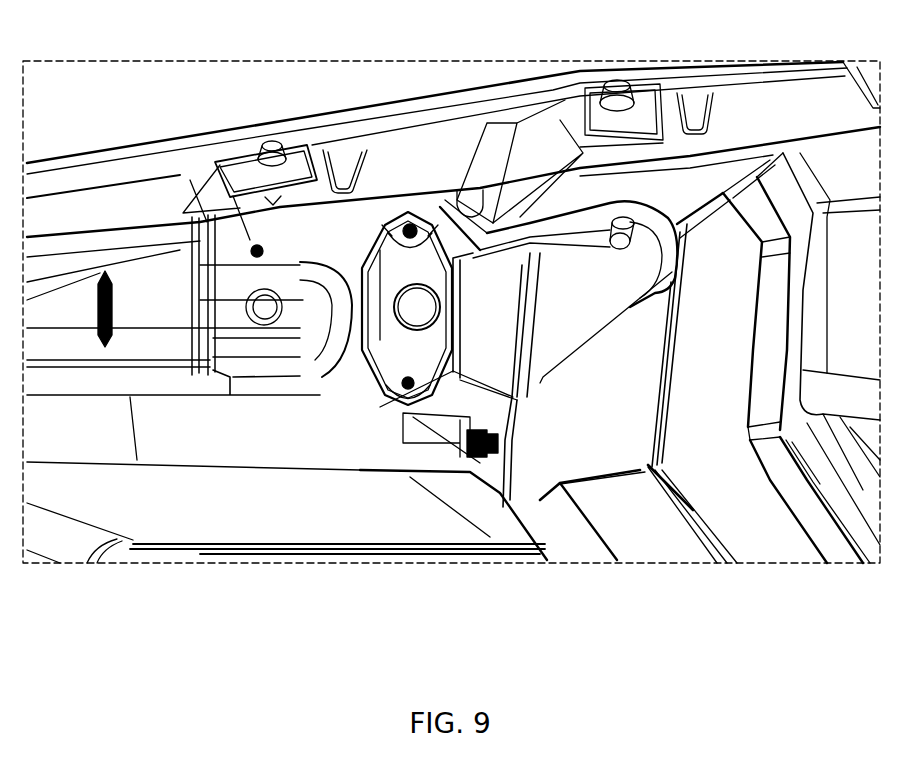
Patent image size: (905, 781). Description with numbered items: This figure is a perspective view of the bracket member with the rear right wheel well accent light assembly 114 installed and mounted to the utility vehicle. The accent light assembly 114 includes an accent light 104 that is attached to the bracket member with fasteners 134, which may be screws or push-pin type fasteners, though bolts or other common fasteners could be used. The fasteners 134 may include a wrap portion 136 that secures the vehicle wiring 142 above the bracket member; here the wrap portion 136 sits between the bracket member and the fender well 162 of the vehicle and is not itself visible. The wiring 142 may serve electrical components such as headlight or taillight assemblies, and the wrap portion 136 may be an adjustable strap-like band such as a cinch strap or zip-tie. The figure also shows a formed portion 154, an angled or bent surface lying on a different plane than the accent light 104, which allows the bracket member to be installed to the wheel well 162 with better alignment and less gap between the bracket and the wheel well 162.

The accent light 104 is at (370, 383).
The rear right wheel well accent light assembly 114 is at (360, 402).
The fasteners 134 is at (277, 290).
The wrap portion 136 is at (257, 248).
The wiring 142 is at (137, 245).
The formed portion 154 is at (513, 465).
The fender well 162 is at (180, 264).